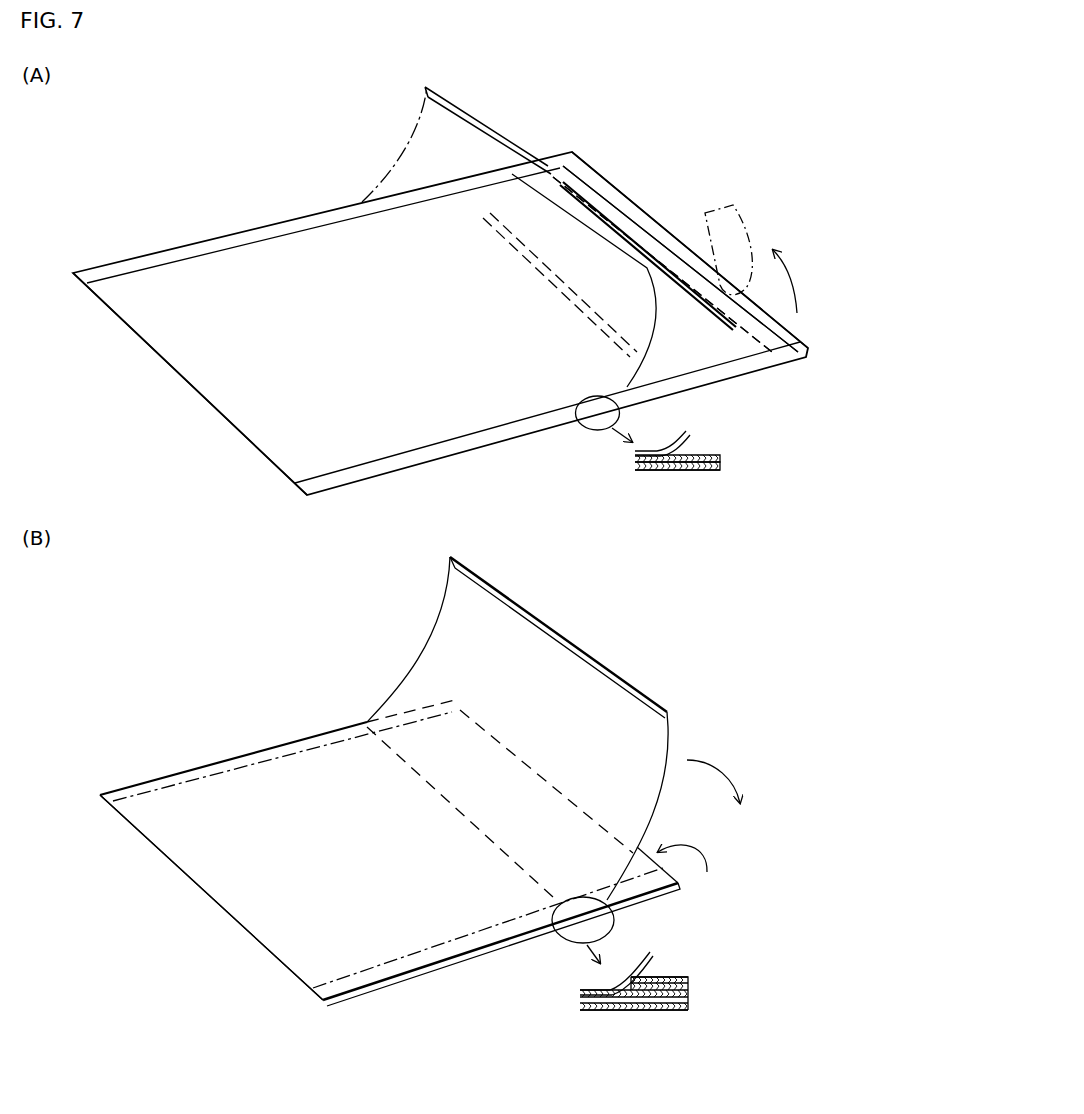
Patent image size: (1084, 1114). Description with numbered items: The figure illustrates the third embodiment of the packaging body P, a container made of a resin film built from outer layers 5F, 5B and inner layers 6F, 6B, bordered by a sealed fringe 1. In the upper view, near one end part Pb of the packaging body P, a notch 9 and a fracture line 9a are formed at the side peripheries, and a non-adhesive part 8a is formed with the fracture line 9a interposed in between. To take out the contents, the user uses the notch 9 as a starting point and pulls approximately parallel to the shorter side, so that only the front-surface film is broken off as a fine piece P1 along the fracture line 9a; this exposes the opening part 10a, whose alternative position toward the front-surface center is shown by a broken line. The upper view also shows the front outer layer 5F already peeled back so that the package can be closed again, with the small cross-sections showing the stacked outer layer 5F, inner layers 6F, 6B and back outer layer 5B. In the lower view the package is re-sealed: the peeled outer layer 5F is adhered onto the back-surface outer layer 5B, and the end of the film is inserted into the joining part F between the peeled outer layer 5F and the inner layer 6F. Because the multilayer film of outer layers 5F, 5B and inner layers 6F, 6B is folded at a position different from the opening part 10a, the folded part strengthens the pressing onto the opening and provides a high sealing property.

The sealed fringe 1 is at (118, 266).
The outer layer 5F is at (407, 143).
The outer layer 5B is at (722, 471).
The inner layer 6F is at (722, 458).
The inner layer 6B is at (722, 467).
The non-adhesive part 8a is at (465, 128).
The notch 9 is at (777, 363).
The fracture line 9a is at (737, 335).
The opening part 10a is at (590, 212).
The packaging body P is at (258, 195).
The fine piece P1 is at (722, 203).
The one end part Pb is at (630, 203).
The joining part F is at (443, 802).